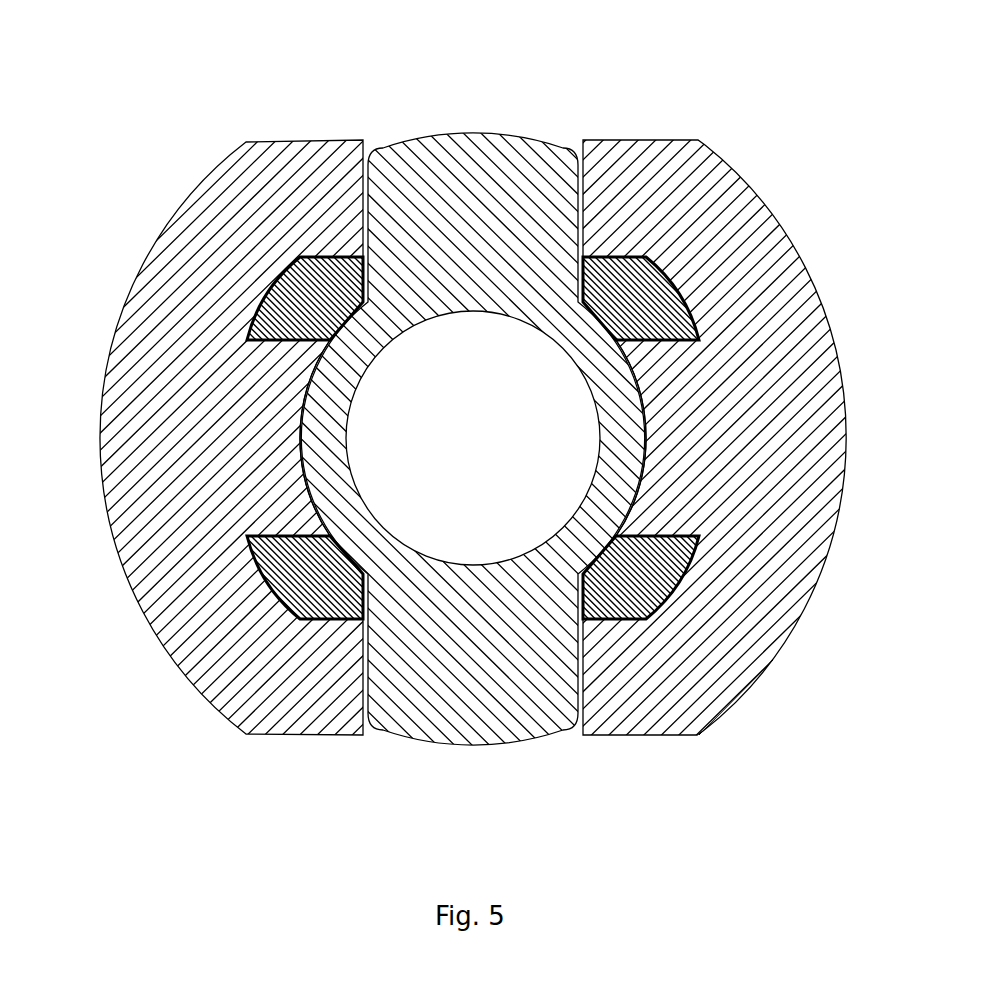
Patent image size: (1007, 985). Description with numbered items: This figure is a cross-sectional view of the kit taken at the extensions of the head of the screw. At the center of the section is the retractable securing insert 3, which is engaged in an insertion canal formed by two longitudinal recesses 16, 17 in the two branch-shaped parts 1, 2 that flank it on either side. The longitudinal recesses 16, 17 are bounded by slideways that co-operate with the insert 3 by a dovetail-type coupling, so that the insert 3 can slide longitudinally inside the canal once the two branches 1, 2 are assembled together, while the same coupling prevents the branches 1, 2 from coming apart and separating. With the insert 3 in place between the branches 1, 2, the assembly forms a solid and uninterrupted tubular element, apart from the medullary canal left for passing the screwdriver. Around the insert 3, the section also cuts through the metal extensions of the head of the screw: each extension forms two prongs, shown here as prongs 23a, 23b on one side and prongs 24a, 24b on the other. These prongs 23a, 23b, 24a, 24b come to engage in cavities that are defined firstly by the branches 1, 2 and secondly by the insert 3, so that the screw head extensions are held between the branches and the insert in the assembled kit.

The branch-shaped part 1 is at (683, 188).
The branch-shaped part 2 is at (245, 205).
The retractable securing insert 3 is at (438, 192).
The longitudinal recess 16 is at (645, 399).
The longitudinal recess 17 is at (302, 388).
The prong 23a is at (633, 290).
The prong 23b is at (623, 600).
The prong 24a is at (343, 277).
The prong 24b is at (325, 600).